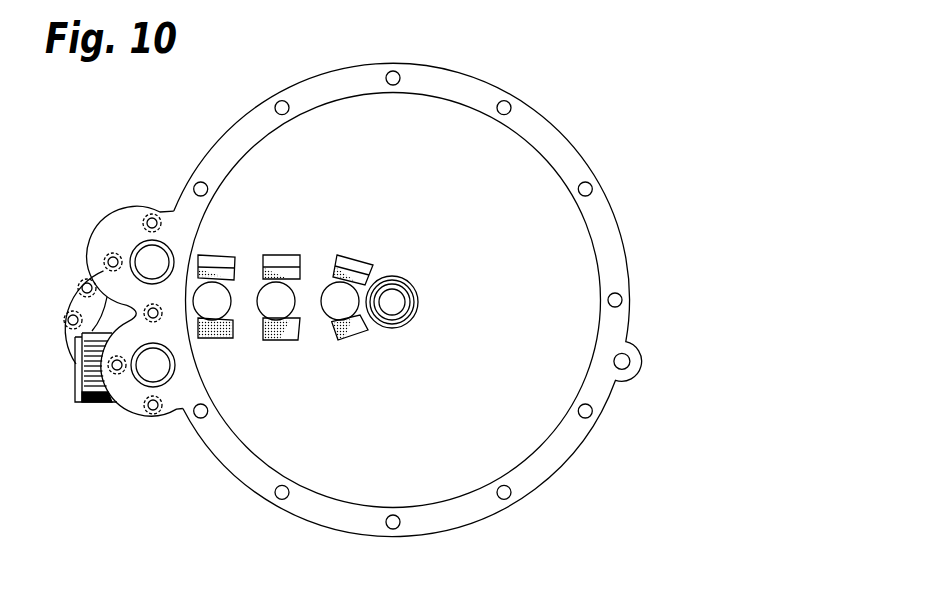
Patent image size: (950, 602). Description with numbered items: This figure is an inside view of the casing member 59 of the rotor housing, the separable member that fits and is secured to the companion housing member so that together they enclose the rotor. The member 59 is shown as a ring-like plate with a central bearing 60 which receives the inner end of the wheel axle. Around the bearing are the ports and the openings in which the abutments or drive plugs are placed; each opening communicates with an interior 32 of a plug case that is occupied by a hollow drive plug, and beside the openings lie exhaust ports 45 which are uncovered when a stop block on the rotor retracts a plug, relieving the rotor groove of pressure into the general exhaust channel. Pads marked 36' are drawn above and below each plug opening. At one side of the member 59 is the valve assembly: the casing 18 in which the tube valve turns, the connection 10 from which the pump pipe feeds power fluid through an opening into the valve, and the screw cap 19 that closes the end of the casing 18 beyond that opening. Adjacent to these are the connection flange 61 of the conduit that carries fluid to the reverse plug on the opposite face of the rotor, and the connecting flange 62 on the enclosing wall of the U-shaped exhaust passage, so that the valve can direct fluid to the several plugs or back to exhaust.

The connection 10 is at (100, 303).
The casing 18 is at (95, 402).
The screw cap 19 is at (75, 380).
The interior 32 is at (235, 308).
The lower pad 36' is at (224, 355).
The exhaust port 45 is at (225, 257).
The casing member 59 is at (598, 222).
The central bearing 60 is at (418, 302).
The connection flange 61 is at (137, 405).
The connecting flange 62 is at (122, 230).